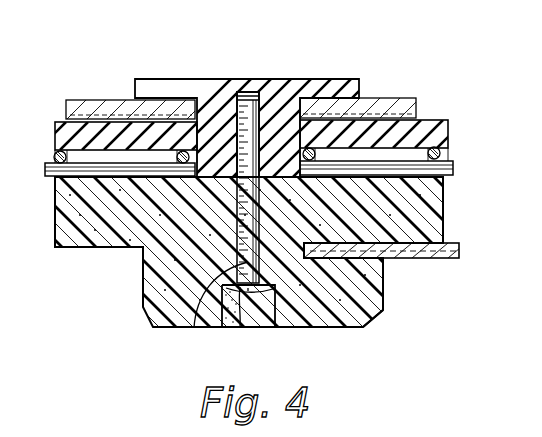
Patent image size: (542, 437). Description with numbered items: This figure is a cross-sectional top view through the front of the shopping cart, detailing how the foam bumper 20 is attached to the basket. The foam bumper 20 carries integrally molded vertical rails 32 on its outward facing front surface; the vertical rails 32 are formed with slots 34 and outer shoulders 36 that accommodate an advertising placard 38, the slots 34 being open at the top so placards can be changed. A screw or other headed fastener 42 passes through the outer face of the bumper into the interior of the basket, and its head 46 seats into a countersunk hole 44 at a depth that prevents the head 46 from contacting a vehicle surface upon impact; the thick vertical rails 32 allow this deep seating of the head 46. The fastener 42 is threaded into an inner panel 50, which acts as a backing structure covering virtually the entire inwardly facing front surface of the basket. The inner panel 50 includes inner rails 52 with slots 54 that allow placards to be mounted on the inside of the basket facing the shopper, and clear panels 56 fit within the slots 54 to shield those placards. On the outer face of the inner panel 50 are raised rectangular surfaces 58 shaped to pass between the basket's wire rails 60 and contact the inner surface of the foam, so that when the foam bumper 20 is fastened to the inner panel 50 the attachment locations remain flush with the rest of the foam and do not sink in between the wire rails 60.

The foam bumper 20 is at (108, 250).
The vertical rails 32 is at (320, 327).
The slots 34 is at (386, 262).
The outer shoulders 36 is at (362, 288).
The advertising placard 38 is at (437, 258).
The fastener 42 is at (195, 328).
The countersunk hole 44 is at (275, 300).
The head 46 is at (240, 290).
The inner panel 50 is at (99, 121).
The inner rails 52 is at (266, 78).
The slots 54 is at (178, 100).
The clear panels 56 is at (104, 128).
The raised rectangular surfaces 58 is at (215, 164).
The wire rails 60 is at (50, 165).